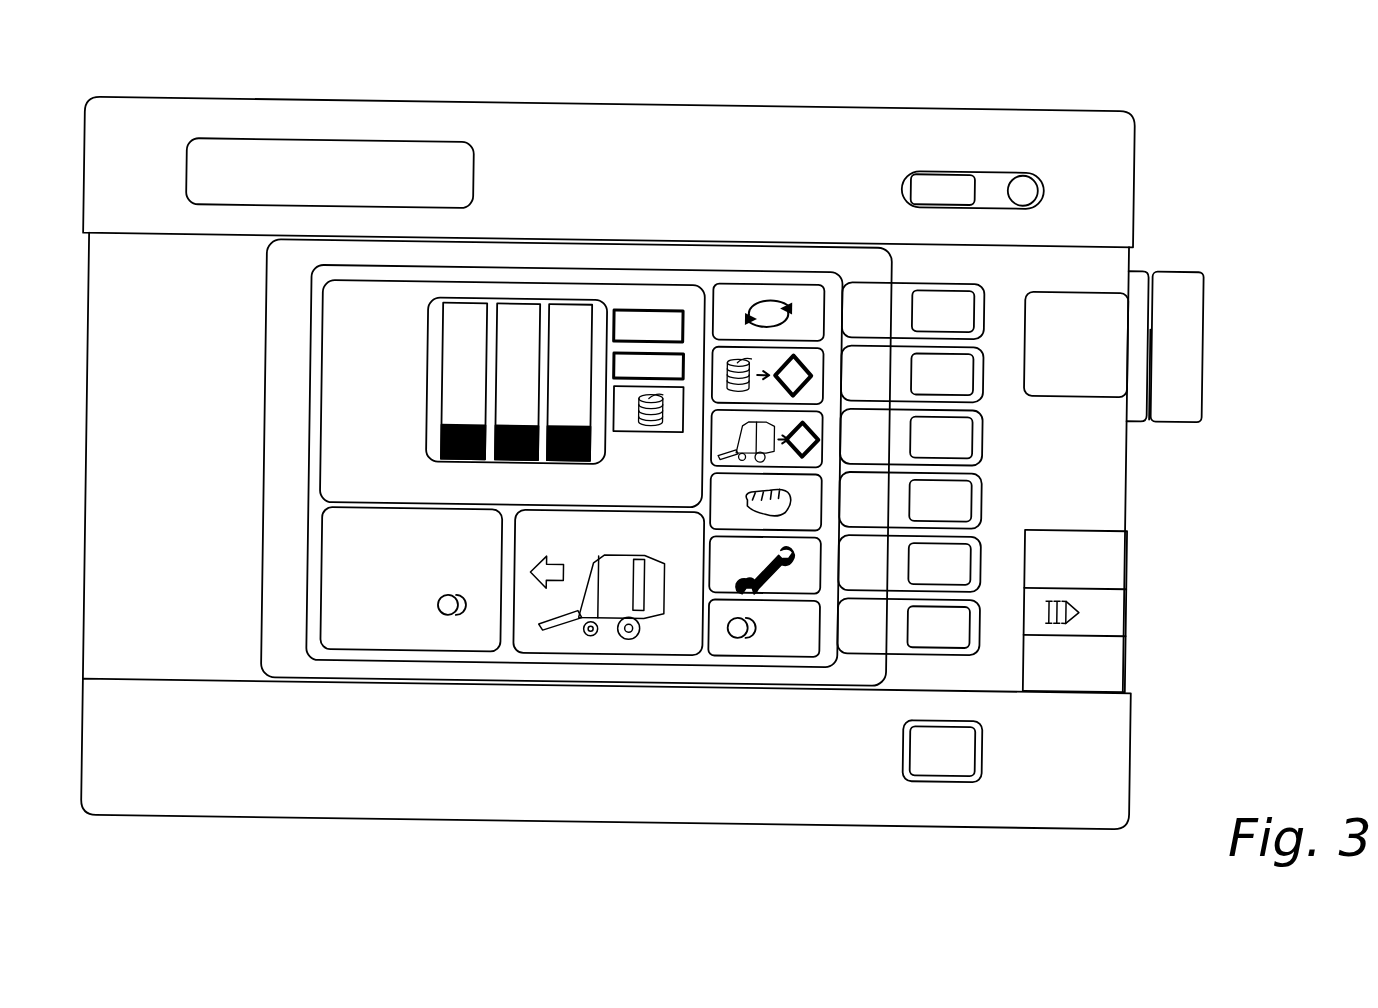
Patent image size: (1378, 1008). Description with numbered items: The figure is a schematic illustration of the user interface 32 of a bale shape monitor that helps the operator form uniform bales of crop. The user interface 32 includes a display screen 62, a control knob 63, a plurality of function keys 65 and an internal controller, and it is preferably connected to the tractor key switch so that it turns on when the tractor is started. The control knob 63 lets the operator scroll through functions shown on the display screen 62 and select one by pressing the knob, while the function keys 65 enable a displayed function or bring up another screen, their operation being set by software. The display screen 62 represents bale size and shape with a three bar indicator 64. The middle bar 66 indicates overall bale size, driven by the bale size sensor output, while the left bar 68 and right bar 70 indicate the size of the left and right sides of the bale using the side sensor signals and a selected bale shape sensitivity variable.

The user interface 32 is at (292, 92).
The display screen 62 is at (338, 332).
The control knob 63 is at (1164, 414).
The three bar indicator 64 is at (615, 298).
The function keys 65 is at (960, 295).
The middle bar 66 is at (519, 461).
The left bar 68 is at (440, 444).
The right bar 70 is at (590, 447).